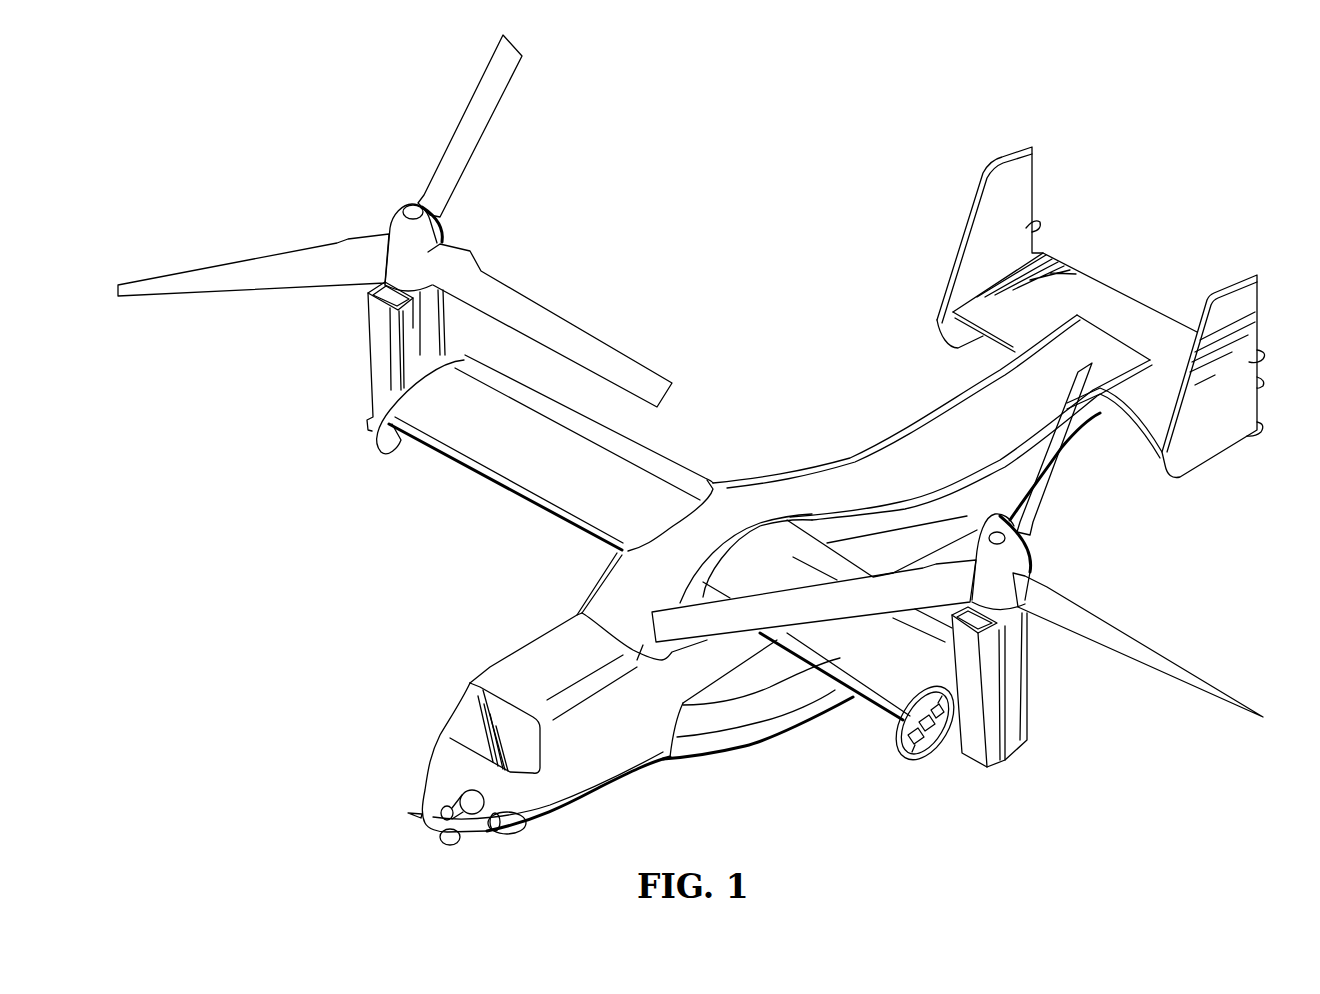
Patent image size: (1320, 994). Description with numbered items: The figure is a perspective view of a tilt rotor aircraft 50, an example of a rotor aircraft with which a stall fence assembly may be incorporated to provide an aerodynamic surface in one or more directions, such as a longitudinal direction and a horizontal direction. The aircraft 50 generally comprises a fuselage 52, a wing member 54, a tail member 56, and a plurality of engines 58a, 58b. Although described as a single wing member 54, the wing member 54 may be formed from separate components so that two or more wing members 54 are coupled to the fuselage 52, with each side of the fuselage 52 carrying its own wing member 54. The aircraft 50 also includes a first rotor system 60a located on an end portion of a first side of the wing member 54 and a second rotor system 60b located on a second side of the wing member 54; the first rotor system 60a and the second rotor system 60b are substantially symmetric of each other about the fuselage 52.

The tilt rotor aircraft 50 is at (1217, 138).
The fuselage 52 is at (713, 720).
The wing member 54 is at (512, 485).
The tail member 56 is at (1108, 302).
The engine 58a is at (367, 340).
The engine 58b is at (1030, 707).
The first rotor system 60a is at (391, 226).
The second rotor system 60b is at (1030, 563).